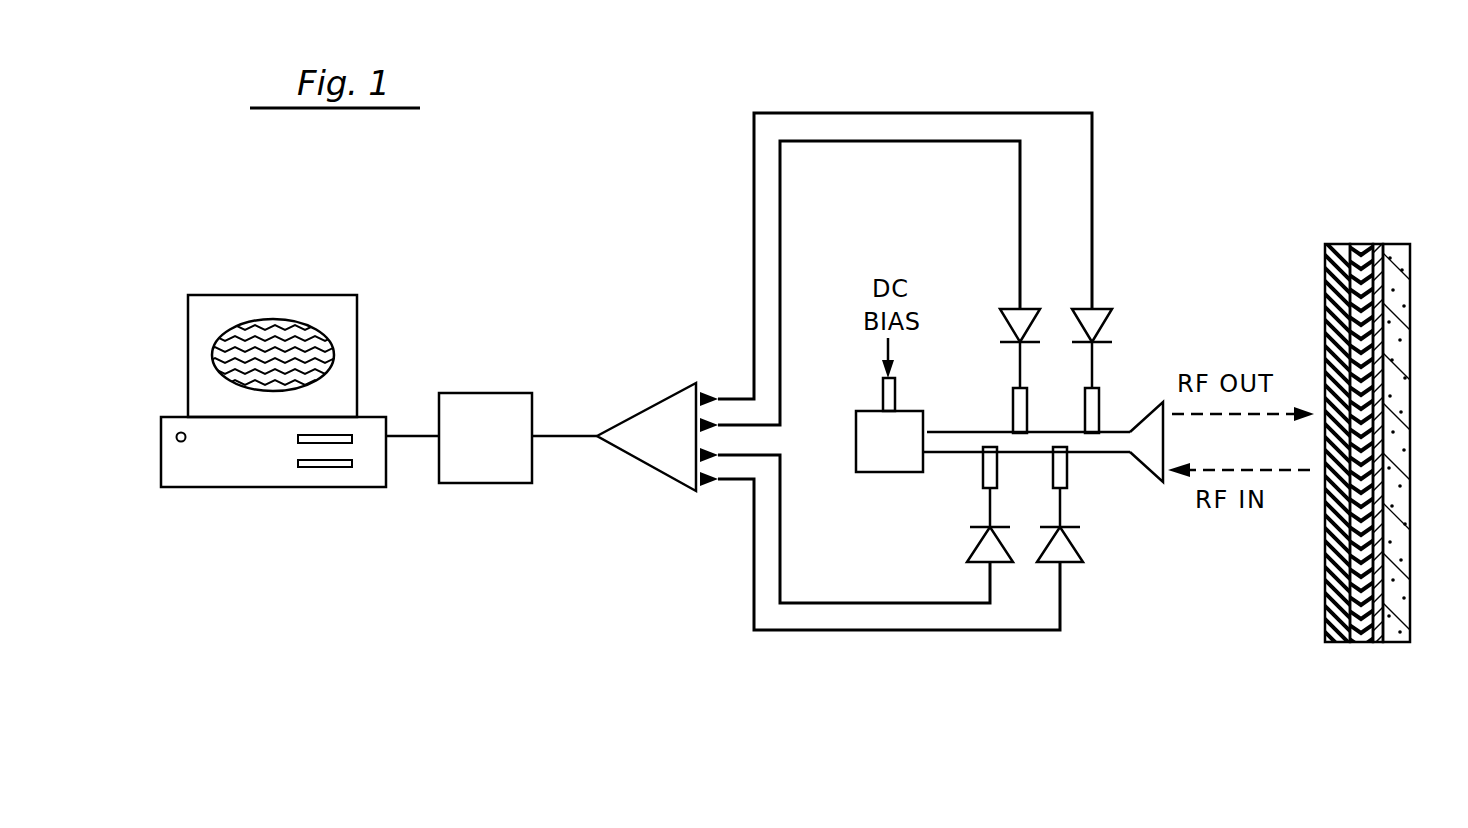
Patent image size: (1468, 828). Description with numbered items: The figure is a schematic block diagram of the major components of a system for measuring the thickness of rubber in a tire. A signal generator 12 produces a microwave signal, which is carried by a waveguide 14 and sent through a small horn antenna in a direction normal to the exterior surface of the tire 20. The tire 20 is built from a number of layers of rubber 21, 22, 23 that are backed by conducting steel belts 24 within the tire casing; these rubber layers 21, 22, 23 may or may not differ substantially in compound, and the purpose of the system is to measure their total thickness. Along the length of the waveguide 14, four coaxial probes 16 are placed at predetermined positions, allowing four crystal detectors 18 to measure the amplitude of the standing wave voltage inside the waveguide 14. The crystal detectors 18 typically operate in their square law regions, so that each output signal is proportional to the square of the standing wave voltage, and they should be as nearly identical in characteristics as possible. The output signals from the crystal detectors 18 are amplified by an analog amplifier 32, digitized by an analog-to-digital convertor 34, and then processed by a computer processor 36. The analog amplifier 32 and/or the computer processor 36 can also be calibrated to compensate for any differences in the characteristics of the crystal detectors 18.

The signal generator 12 is at (866, 465).
The waveguide 14 is at (957, 447).
The coaxial probes 16 is at (1013, 400).
The crystal detectors 18 is at (1045, 548).
The tire 20 is at (1372, 448).
The layer of rubber 21 is at (1337, 642).
The layer of rubber 22 is at (1362, 642).
The layer of rubber 23 is at (1380, 642).
The conducting steel belts 24 is at (1398, 642).
The analog amplifier 32 is at (655, 466).
The analog-to-digital convertor 34 is at (496, 478).
The computer processor 36 is at (260, 473).